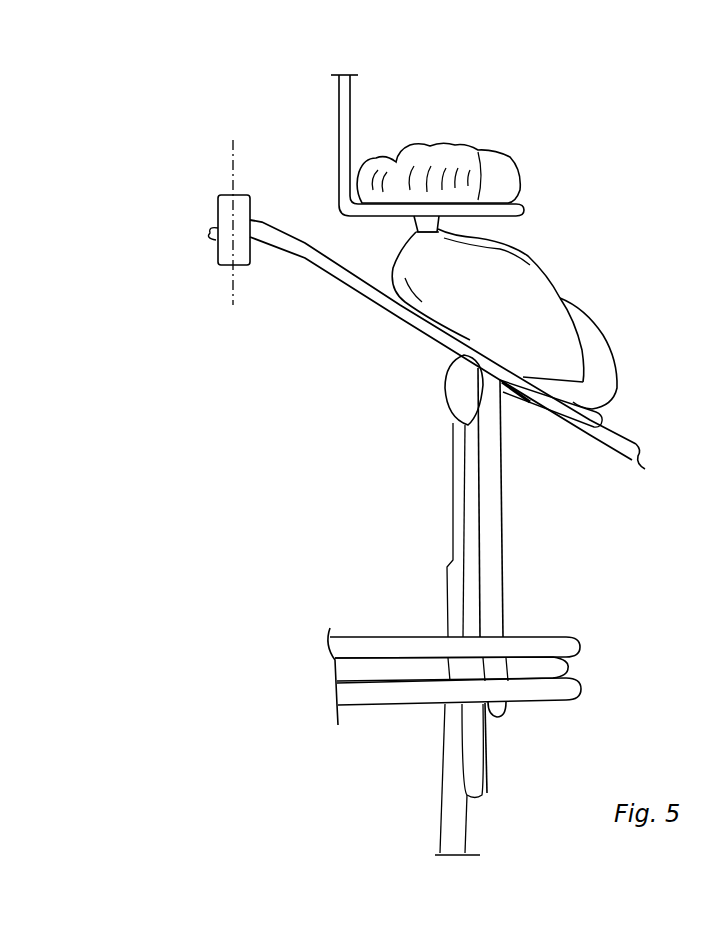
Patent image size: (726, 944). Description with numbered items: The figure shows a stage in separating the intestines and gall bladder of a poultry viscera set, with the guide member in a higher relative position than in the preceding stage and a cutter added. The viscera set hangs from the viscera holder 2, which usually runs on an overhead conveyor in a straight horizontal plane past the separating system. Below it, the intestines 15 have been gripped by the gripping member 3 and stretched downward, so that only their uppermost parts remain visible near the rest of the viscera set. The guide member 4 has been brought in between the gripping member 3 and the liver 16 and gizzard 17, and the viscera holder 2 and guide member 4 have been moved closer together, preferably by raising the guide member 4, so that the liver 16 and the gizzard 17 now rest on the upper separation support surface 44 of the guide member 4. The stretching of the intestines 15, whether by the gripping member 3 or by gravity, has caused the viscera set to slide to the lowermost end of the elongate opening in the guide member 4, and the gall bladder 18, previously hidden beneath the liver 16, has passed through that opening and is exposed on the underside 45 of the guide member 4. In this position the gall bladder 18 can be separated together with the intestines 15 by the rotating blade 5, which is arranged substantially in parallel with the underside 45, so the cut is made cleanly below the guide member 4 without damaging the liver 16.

The viscera holder 2 is at (334, 121).
The gripping member 3 is at (353, 633).
The guide member 4 is at (331, 291).
The rotating blade 5 is at (612, 460).
The intestines 15 is at (467, 543).
The liver 16 is at (525, 270).
The gizzard 17 is at (590, 312).
The gall bladder 18 is at (455, 390).
The upper separation support surface 44 is at (418, 150).
The underside 45 is at (388, 225).